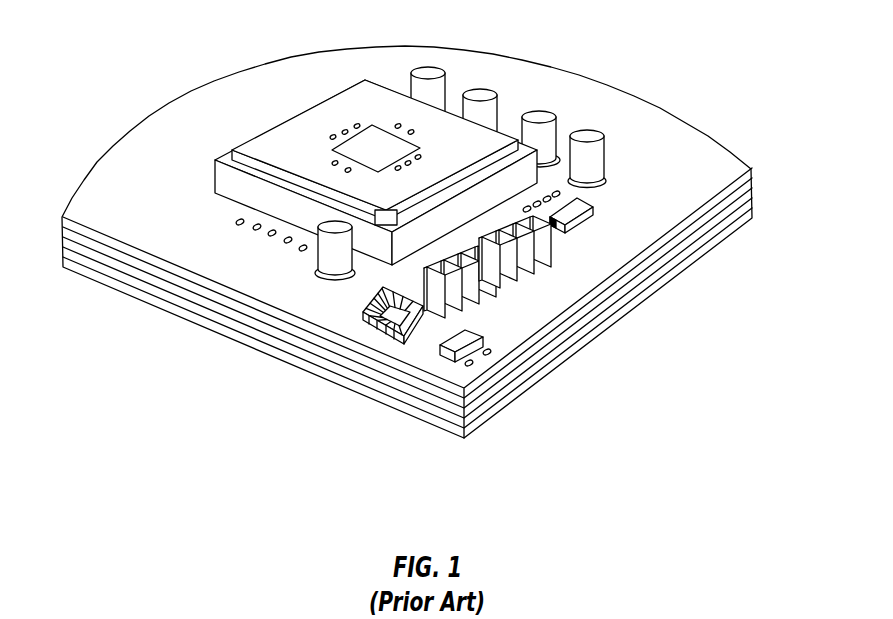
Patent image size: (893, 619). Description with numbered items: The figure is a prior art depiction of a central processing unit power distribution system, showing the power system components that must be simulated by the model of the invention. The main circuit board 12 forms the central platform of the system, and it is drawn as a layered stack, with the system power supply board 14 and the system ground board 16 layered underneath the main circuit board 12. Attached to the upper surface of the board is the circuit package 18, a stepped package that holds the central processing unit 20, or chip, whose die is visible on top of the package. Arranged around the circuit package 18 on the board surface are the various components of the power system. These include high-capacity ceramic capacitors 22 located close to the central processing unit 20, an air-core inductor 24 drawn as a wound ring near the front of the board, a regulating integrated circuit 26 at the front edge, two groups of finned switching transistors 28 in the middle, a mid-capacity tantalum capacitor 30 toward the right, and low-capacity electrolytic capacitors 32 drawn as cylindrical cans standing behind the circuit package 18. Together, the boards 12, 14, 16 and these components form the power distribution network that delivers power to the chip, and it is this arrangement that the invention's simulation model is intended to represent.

The main circuit board 12 is at (113, 166).
The system power supply board 14 is at (753, 188).
The system ground board 16 is at (753, 203).
The circuit package 18 is at (268, 132).
The central processing unit 20 is at (390, 140).
The high-capacity ceramic capacitors 22 is at (333, 164).
The air-core inductor 24 is at (363, 318).
The regulating integrated circuit 26 is at (482, 338).
The switching transistors 28 is at (514, 279).
The mid-capacity tantalum capacitor 30 is at (581, 221).
The low-capacity electrolytic capacitors 32 is at (581, 128).